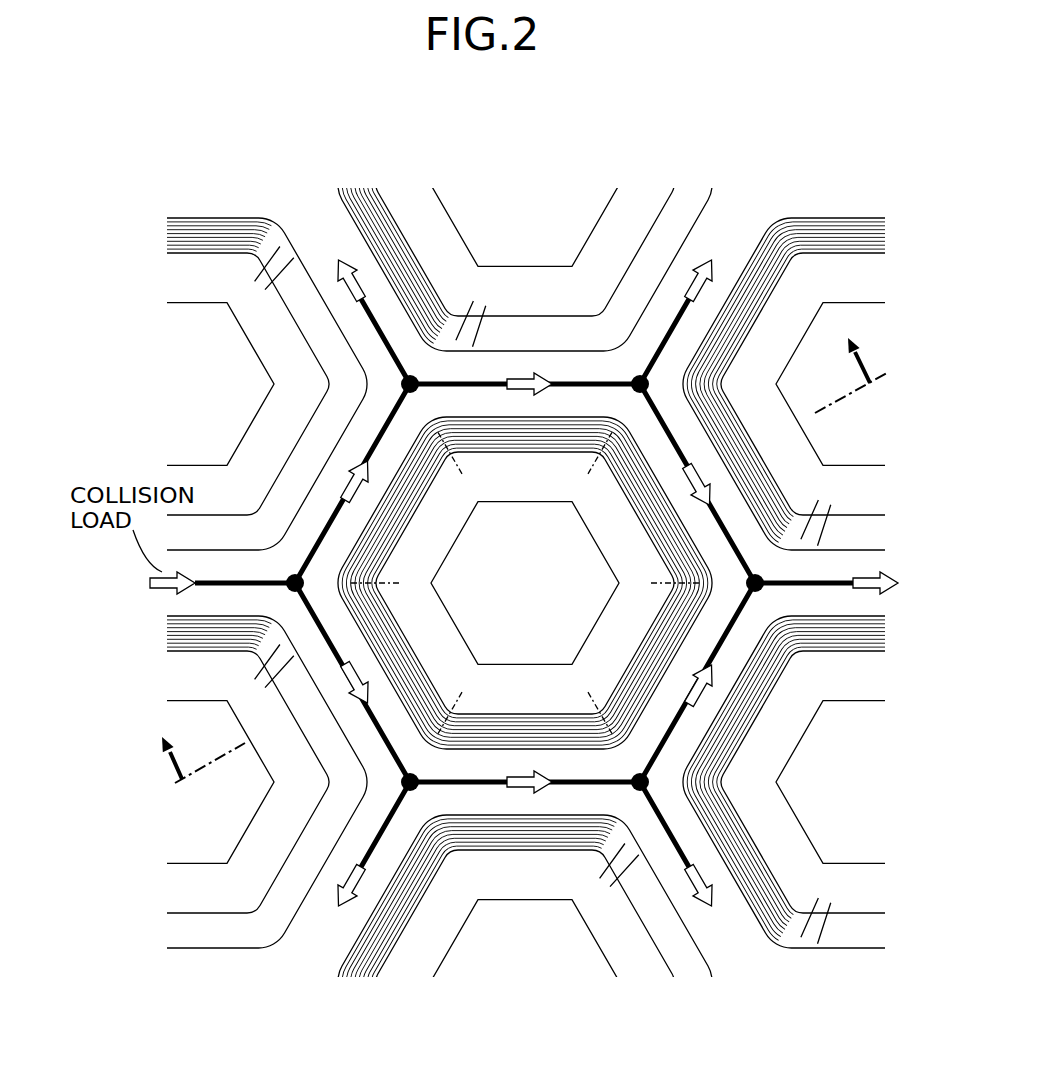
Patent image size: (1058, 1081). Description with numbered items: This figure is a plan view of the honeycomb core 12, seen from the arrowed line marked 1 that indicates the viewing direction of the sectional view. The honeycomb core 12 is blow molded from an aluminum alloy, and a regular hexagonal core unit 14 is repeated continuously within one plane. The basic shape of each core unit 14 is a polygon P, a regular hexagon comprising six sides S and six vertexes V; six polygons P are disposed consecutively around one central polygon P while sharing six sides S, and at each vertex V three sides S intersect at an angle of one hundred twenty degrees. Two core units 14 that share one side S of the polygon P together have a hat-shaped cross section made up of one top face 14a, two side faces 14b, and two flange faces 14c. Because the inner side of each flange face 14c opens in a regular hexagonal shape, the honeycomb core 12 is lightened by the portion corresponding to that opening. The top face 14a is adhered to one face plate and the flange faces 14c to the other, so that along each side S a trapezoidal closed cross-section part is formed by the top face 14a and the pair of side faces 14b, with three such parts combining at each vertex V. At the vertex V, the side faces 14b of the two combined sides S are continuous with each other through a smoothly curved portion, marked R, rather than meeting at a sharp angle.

The honeycomb core 12 is at (528, 550).
The core unit 14 is at (524, 594).
The top face 14a is at (366, 519).
The side face 14b is at (500, 440).
The flange face 14c is at (595, 628).
The polygon P is at (495, 358).
The side S is at (583, 382).
The vertex V is at (404, 383).
The rounded corner R is at (445, 455).
The section line of FIG. 1 is at (525, 578).